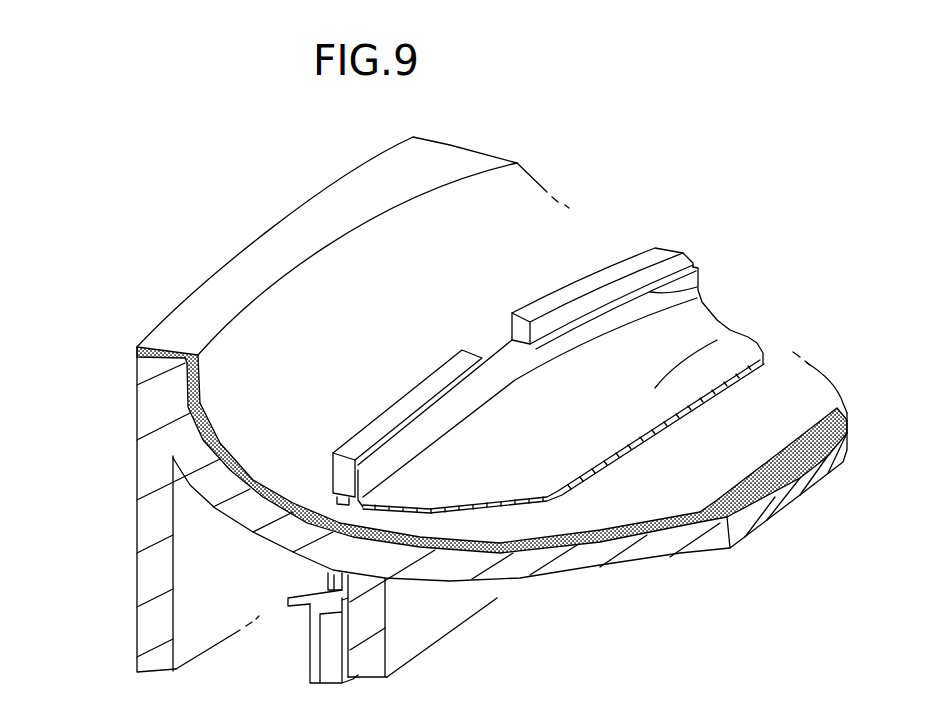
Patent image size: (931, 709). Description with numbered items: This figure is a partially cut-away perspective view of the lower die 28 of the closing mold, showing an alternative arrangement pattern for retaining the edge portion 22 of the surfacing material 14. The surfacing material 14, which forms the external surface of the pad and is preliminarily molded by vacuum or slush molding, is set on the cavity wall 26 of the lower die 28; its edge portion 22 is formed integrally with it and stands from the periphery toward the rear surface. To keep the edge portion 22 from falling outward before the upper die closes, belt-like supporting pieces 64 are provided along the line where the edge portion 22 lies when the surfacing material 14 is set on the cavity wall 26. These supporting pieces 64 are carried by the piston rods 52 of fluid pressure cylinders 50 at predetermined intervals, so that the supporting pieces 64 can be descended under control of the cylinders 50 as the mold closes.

The surfacing material 14 is at (655, 387).
The edge portion 22 is at (697, 285).
The cavity wall 26 is at (300, 387).
The lower die 28 is at (137, 483).
The fluid pressure cylinder 50 is at (333, 665).
The piston rod 52 is at (333, 576).
The belt-like supporting piece 64 is at (625, 265).